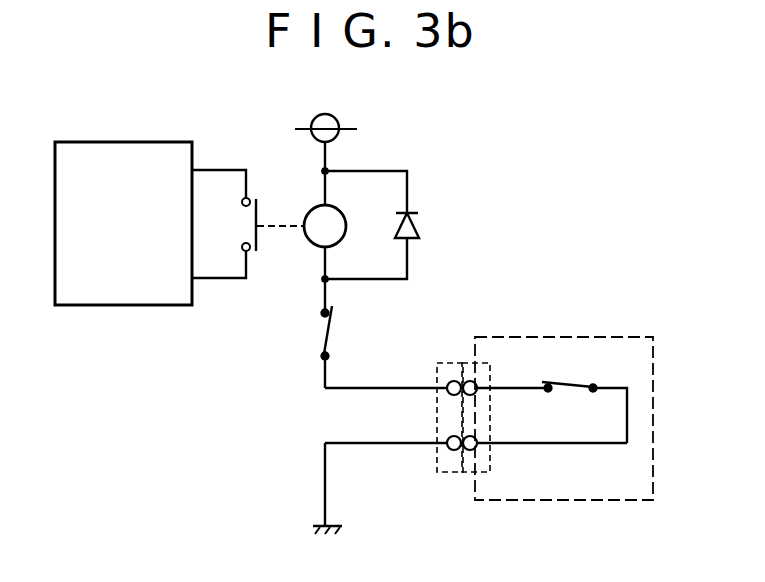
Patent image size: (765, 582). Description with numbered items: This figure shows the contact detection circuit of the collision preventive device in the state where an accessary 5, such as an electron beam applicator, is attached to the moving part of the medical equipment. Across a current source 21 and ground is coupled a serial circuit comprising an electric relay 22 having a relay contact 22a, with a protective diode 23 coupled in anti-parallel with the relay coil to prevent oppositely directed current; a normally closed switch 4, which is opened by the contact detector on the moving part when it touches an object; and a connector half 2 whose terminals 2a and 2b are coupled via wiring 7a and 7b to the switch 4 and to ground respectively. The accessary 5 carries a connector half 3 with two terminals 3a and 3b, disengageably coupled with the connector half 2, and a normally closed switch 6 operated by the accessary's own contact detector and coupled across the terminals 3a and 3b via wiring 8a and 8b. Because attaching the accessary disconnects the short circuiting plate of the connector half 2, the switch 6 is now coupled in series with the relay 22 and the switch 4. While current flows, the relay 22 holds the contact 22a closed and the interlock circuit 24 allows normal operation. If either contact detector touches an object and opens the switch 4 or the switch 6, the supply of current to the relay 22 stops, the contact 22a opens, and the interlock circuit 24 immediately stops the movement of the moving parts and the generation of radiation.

The connector half 2 is at (437, 477).
The terminal 2a is at (449, 381).
The terminal 2b is at (448, 440).
The connector half 3 is at (460, 488).
The terminal 3a is at (472, 381).
The terminal 3b is at (472, 451).
The normally closed switch 4 is at (332, 317).
The accessary 5 is at (572, 336).
The normally closed switch 6 is at (580, 384).
The wiring 7a is at (358, 388).
The wiring 7b is at (368, 444).
The wiring 8a is at (517, 387).
The wiring 8b is at (513, 444).
The current source 21 is at (339, 124).
The electric relay 22 is at (308, 247).
The relay contact 22a is at (256, 202).
The protective diode 23 is at (421, 232).
The interlock circuit 24 is at (107, 300).